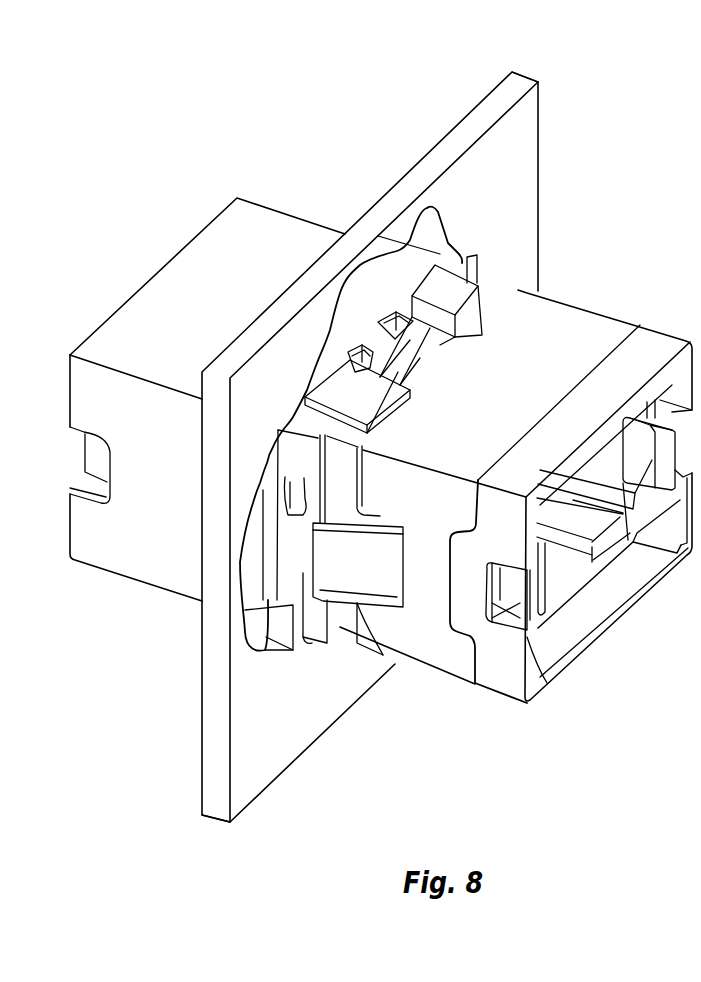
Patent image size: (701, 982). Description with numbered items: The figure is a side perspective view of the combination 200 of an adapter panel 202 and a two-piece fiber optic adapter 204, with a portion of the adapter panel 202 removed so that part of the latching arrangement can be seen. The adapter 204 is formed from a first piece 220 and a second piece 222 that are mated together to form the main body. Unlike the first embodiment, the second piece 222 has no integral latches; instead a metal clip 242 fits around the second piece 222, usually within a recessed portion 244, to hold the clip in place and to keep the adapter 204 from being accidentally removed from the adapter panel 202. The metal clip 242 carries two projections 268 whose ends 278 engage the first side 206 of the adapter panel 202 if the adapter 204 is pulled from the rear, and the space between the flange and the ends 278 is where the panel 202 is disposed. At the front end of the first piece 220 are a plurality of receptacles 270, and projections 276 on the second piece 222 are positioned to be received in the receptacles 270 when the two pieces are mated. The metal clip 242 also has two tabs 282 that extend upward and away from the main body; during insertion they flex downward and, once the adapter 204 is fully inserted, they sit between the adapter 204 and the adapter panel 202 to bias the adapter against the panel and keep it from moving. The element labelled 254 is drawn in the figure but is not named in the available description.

The combination 200 is at (341, 127).
The adapter panel 202 is at (540, 145).
The two-piece fiber optic adapter 204 is at (638, 150).
The first side 206 is at (264, 790).
The rear housing block 254 is at (155, 215).
The first piece 220 is at (116, 576).
The metal clip 242 is at (595, 327).
The recessed portion 244 is at (473, 686).
The second piece 222 is at (510, 703).
The tabs 282 is at (455, 292).
The receptacles 270 is at (380, 340).
The projections 276 is at (398, 372).
The projections 268 is at (370, 572).
The ends 278 is at (306, 630).